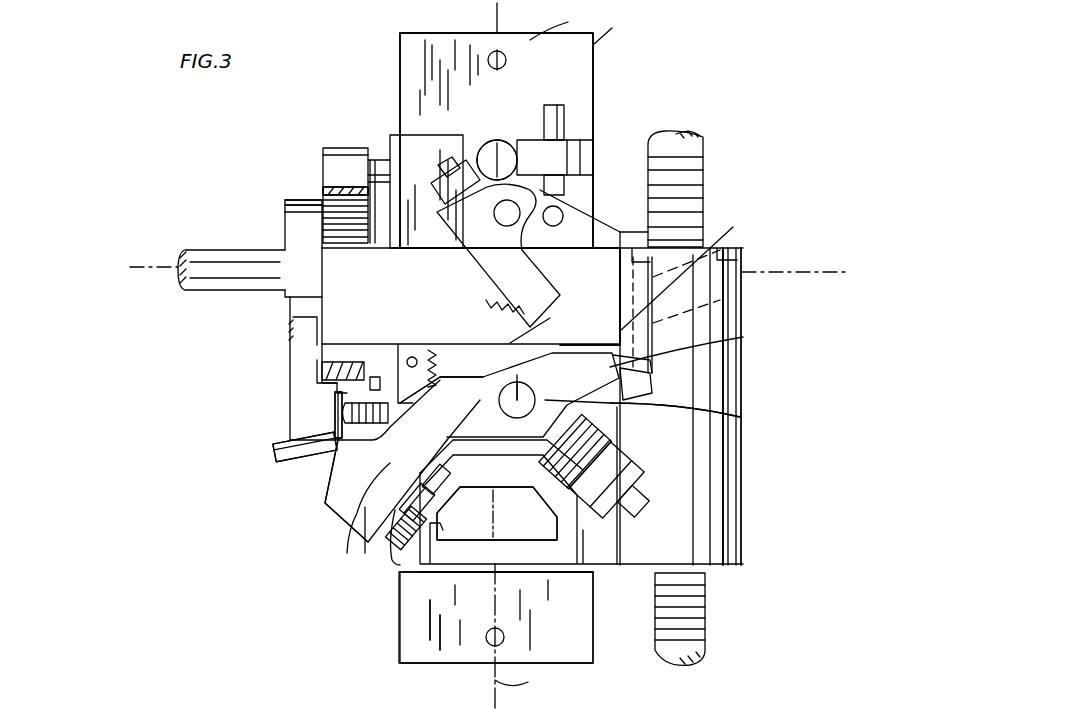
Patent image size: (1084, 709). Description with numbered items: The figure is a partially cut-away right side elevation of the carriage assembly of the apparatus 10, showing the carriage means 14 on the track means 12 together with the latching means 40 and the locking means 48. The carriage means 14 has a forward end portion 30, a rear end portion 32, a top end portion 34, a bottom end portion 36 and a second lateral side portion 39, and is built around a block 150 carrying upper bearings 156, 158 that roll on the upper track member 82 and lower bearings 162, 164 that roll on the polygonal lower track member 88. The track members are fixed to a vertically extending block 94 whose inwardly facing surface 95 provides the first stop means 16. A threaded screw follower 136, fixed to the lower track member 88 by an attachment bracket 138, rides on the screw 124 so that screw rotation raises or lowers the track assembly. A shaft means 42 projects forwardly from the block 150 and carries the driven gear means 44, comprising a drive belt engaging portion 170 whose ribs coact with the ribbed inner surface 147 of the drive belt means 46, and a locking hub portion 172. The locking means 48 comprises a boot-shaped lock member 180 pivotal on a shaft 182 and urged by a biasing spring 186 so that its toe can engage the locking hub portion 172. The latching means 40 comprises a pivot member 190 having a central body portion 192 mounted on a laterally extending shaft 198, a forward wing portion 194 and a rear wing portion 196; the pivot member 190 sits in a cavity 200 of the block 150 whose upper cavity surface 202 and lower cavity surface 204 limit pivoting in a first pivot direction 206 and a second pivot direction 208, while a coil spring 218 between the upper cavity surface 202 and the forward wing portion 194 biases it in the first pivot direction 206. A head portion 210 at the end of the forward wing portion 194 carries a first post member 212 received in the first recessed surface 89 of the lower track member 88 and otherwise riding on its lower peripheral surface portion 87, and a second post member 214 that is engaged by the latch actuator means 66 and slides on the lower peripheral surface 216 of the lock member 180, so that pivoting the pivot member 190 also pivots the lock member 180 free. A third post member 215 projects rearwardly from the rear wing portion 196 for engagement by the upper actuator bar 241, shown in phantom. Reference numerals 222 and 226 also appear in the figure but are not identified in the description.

The apparatus 10 is at (712, 98).
The track means 12 is at (500, 142).
The carriage means 14 is at (398, 85).
The first stop means 16 is at (593, 57).
The forward end portion 30 is at (471, 296).
The rear end portion 32 is at (658, 248).
The top end portion 34 is at (395, 135).
The bottom end portion 36 is at (500, 460).
The second lateral side portion 39 is at (583, 265).
The latching means 40 is at (365, 553).
The shaft means 42 is at (215, 297).
The driven gear means 44 is at (283, 232).
The drive belt means 46 is at (345, 190).
The locking means 48 is at (290, 393).
The latch actuator means 66 is at (687, 276).
The upper track member 82 is at (492, 140).
The lower peripheral surface portion 87 is at (400, 655).
The lower track member 88 is at (585, 560).
The first recessed surface 89 is at (443, 565).
The block 94 is at (561, 22).
The inwardly facing surface 95 is at (623, 25).
The screw 124 is at (698, 148).
The screw follower 136 is at (736, 380).
The attachment bracket 138 is at (738, 570).
The ribbed inner surface 147 is at (343, 363).
The block 150 is at (547, 263).
The bearing 156 is at (598, 150).
The bearing 158 is at (452, 163).
The lower bearing 162 is at (432, 482).
The lower bearing 164 is at (640, 475).
The drive belt engaging portion 170 is at (333, 195).
The locking hub portion 172 is at (290, 205).
The lock member 180 is at (290, 366).
The shaft 182 is at (333, 430).
The biasing spring 186 is at (333, 410).
The pivot member 190 is at (425, 454).
The central body portion 192 is at (571, 296).
The forward wing portion 194 is at (348, 545).
The rear wing portion 196 is at (743, 343).
The shaft 198 is at (489, 420).
The cavity 200 is at (571, 296).
The upper cavity surface 202 is at (725, 272).
The lower cavity surface 204 is at (738, 418).
The first pivot direction 206 is at (441, 402).
The second pivot direction 208 is at (611, 377).
The head portion 210 is at (325, 505).
The first post member 212 is at (392, 562).
The second post member 214 is at (300, 462).
The third post member 215 is at (675, 405).
The lower peripheral surface 216 is at (320, 470).
The coil spring 218 is at (437, 347).
The spacer 222 is at (340, 185).
The keyway 226 is at (397, 350).
The upper actuator bar 241 is at (745, 301).